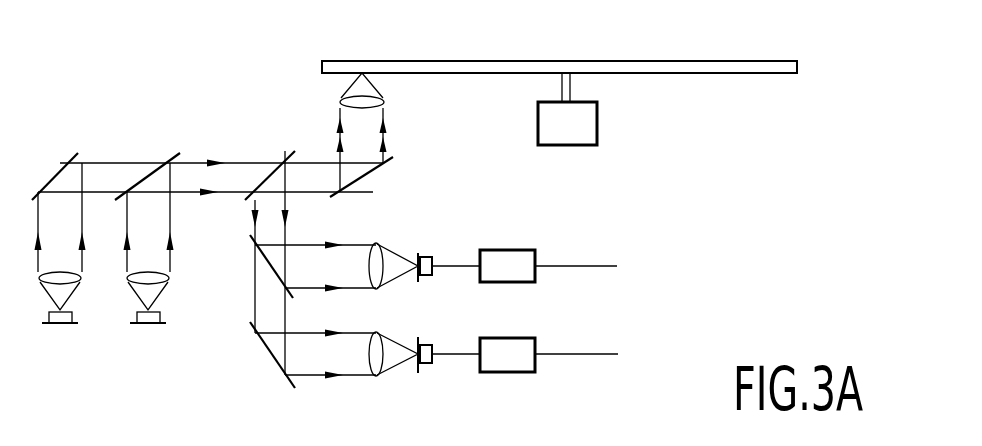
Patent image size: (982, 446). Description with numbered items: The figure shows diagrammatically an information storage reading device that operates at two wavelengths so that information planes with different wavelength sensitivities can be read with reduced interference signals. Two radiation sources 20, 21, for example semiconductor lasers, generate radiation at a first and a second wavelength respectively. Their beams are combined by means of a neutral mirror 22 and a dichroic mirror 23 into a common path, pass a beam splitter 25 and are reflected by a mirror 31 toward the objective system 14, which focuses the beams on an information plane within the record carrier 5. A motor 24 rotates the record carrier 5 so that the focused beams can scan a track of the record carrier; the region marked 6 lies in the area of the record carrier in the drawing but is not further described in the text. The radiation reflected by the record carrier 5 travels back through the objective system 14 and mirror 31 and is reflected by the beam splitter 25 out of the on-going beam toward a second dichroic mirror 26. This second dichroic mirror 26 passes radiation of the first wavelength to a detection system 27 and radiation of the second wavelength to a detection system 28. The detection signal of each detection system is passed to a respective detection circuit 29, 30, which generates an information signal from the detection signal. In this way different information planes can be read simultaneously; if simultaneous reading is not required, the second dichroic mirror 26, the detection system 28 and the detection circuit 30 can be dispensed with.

The record carrier 5 is at (822, 37).
The measurement region 6 is at (797, 287).
The objective system 14 is at (384, 101).
The radiation source 20 is at (60, 325).
The radiation source 21 is at (148, 325).
The neutral mirror 22 is at (67, 160).
The dichroic mirror 23 is at (176, 160).
The motor 24 is at (597, 118).
The beam splitter 25 is at (290, 153).
The second dichroic mirror 26 is at (250, 236).
The detection system 27 is at (425, 373).
The detection system 28 is at (425, 283).
The detection circuit 29 is at (512, 373).
The detection circuit 30 is at (512, 283).
The mirror 31 is at (380, 163).